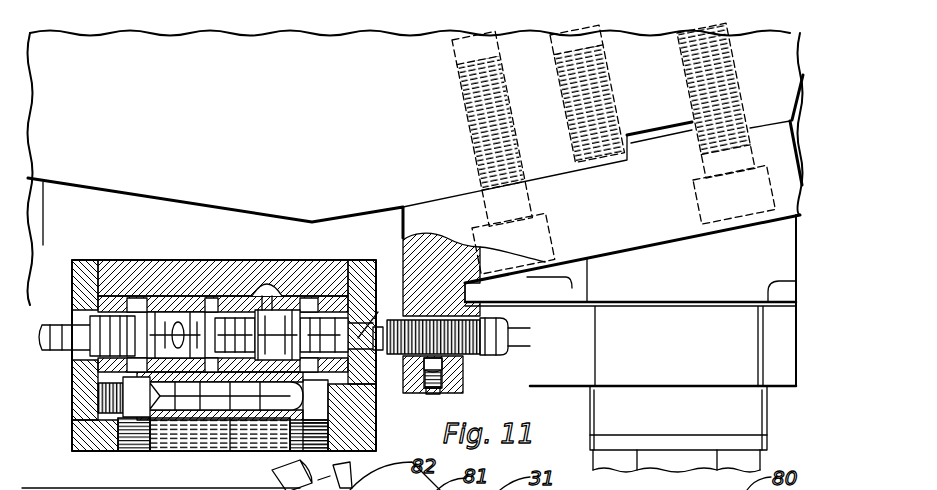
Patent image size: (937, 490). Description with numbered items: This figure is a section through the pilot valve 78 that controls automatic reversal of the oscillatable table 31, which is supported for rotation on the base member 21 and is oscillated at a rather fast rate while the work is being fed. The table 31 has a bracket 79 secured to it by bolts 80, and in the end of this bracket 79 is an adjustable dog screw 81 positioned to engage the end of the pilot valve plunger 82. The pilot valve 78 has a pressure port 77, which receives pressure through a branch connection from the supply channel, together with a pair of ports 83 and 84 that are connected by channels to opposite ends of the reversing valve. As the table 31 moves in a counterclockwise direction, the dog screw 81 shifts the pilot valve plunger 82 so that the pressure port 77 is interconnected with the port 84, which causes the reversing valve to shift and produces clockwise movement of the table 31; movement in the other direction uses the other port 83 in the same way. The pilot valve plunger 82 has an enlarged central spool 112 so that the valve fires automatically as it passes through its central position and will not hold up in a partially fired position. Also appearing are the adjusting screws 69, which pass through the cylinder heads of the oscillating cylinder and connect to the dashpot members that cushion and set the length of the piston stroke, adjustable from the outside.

The oscillatable table 31 is at (171, 77).
The base member 21 is at (752, 262).
The bracket 79 is at (642, 210).
The bolts 80 is at (532, 238).
The adjusting screws 69 is at (703, 410).
The adjustable dog screw 81 is at (486, 360).
The pilot valve 78 is at (118, 363).
The pilot valve plunger 82 is at (66, 332).
The port 83 is at (284, 278).
The port 84 is at (178, 297).
The enlarged central spool 112 is at (212, 297).
The pressure port 77 is at (272, 300).